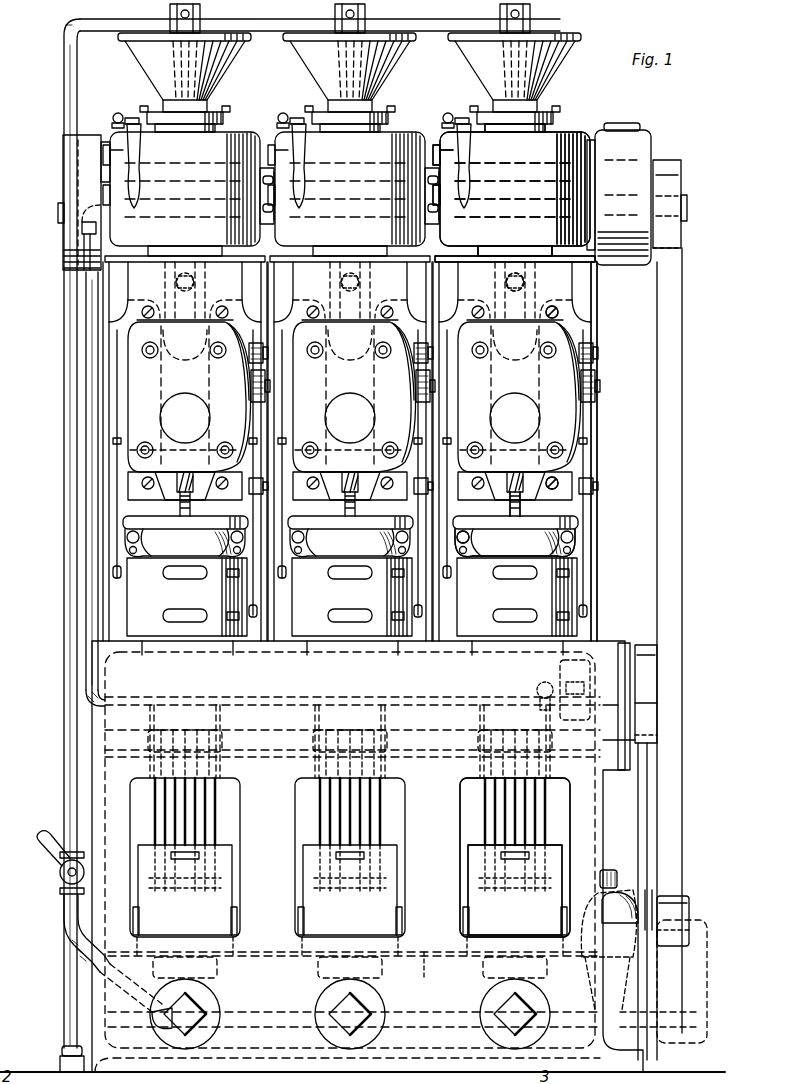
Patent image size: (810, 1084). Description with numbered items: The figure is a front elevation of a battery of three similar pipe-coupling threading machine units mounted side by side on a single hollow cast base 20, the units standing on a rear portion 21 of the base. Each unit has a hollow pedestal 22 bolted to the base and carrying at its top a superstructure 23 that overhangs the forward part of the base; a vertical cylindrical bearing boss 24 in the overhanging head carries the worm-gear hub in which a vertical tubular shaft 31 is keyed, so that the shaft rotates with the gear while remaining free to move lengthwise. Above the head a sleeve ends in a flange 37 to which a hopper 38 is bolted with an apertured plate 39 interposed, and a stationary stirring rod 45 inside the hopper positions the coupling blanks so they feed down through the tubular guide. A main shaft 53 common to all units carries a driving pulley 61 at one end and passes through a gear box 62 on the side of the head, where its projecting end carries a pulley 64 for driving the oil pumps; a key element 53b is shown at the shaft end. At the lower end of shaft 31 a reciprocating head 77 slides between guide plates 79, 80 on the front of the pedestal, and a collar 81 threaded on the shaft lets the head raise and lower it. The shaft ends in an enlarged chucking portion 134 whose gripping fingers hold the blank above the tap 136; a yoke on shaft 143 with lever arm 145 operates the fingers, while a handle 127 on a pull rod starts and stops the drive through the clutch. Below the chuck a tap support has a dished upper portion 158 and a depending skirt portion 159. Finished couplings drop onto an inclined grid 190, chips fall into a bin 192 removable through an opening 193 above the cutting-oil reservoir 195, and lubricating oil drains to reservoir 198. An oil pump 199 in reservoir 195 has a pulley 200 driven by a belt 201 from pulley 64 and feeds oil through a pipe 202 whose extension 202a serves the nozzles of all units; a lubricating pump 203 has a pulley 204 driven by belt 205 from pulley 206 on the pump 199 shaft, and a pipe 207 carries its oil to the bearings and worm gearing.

The base 20 is at (333, 877).
The rear portion of the base 21 is at (367, 856).
The hollow pedestal 22 is at (598, 455).
The superstructure 23 is at (514, 197).
The cylindrical bearing boss 24 is at (548, 248).
The tubular shaft 31 is at (508, 292).
The flange 37 is at (550, 124).
The hopper 38 is at (553, 66).
The apertured plate 39 is at (540, 120).
The stationary stirring rod 45 is at (533, 28).
The shaft 53 is at (58, 212).
The key 53b is at (687, 210).
The driving pulley 61 is at (80, 184).
The gear box 62 is at (619, 194).
The pulley 64 is at (682, 185).
The reciprocating head 77 is at (519, 397).
The guide plate 79 is at (527, 504).
The guide plate 80 is at (478, 494).
The collar 81 is at (556, 308).
The handle 127 is at (466, 150).
The chucking portion 134 is at (560, 486).
The tap 136 is at (500, 517).
The shaft 143 is at (599, 394).
The lever arm 145 is at (596, 382).
The dished upper portion 158 is at (515, 540).
The depending skirt portion 159 is at (516, 592).
The inclined grid 190 is at (495, 812).
The bin 192 is at (515, 890).
The opening 193 is at (462, 790).
The reservoir 195 is at (424, 980).
The reservoir 198 is at (415, 748).
The oil pump 199 is at (612, 890).
The pulley 200 is at (690, 904).
The belt 201 is at (676, 538).
The pipe 202 is at (70, 632).
The extension 202a is at (300, 20).
The pump 203 is at (547, 670).
The pulley 204 is at (658, 673).
The belt 205 is at (646, 788).
The pulley 206 is at (652, 905).
The pipe 207 is at (85, 513).